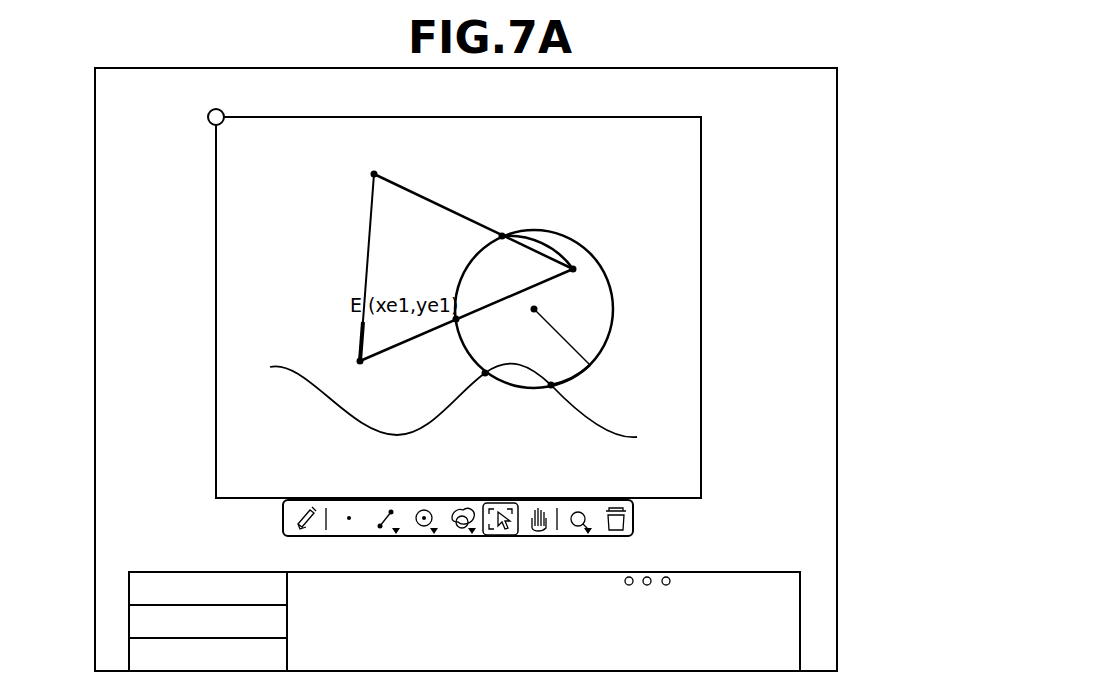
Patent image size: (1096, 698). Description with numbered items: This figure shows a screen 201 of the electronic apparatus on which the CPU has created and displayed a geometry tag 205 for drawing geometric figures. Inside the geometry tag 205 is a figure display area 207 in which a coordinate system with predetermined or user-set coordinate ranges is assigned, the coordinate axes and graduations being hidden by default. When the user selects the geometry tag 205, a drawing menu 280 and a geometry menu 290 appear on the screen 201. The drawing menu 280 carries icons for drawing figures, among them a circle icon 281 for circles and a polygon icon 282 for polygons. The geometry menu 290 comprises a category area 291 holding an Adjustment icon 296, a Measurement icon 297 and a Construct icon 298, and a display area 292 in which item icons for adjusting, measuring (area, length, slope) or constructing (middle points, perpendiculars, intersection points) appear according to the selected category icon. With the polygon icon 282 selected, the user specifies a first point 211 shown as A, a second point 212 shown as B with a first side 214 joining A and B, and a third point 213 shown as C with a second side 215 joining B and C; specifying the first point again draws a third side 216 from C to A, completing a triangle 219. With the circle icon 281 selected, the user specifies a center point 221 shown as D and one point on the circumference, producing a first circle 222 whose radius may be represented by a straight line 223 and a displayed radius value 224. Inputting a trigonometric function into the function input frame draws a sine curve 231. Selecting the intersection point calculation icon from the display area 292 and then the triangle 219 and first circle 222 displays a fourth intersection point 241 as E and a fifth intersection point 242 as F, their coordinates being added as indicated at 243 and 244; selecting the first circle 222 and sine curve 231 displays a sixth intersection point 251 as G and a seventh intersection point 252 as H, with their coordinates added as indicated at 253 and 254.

The screen 201 is at (852, 82).
The geometry tag 205 is at (712, 125).
The figure display area 207 is at (701, 212).
The first point 211 is at (377, 173).
The second point 212 is at (357, 358).
The third point 213 is at (577, 264).
The first side 214 is at (370, 219).
The second side 215 is at (394, 346).
The third side 216 is at (438, 206).
The triangle 219 is at (416, 277).
The center point 221 is at (530, 308).
The first circle 222 is at (614, 283).
The straight line 223 is at (590, 356).
The value 224 is at (588, 313).
The sine curve 231 is at (297, 375).
The fourth intersection point 241 is at (456, 324).
The fifth intersection point 242 is at (500, 232).
The indication of intersection point E and its coordinates 243 is at (342, 252).
The indication of intersection point F and its coordinates 244 is at (563, 234).
The sixth intersection point 251 is at (485, 371).
The seventh intersection point 252 is at (551, 384).
The indication of intersection point G and its coordinates 253 is at (484, 438).
The indication of intersection point H and its coordinates 254 is at (667, 410).
The drawing menu 280 is at (510, 535).
The circle icon 281 is at (425, 528).
The polygon icon 282 is at (460, 528).
The geometry menu 290 is at (464, 586).
The category area 291 is at (158, 586).
The display area 292 is at (790, 624).
The Adjustment icon 296 is at (129, 592).
The Measurement icon 297 is at (129, 624).
The Construct icon 298 is at (129, 657).